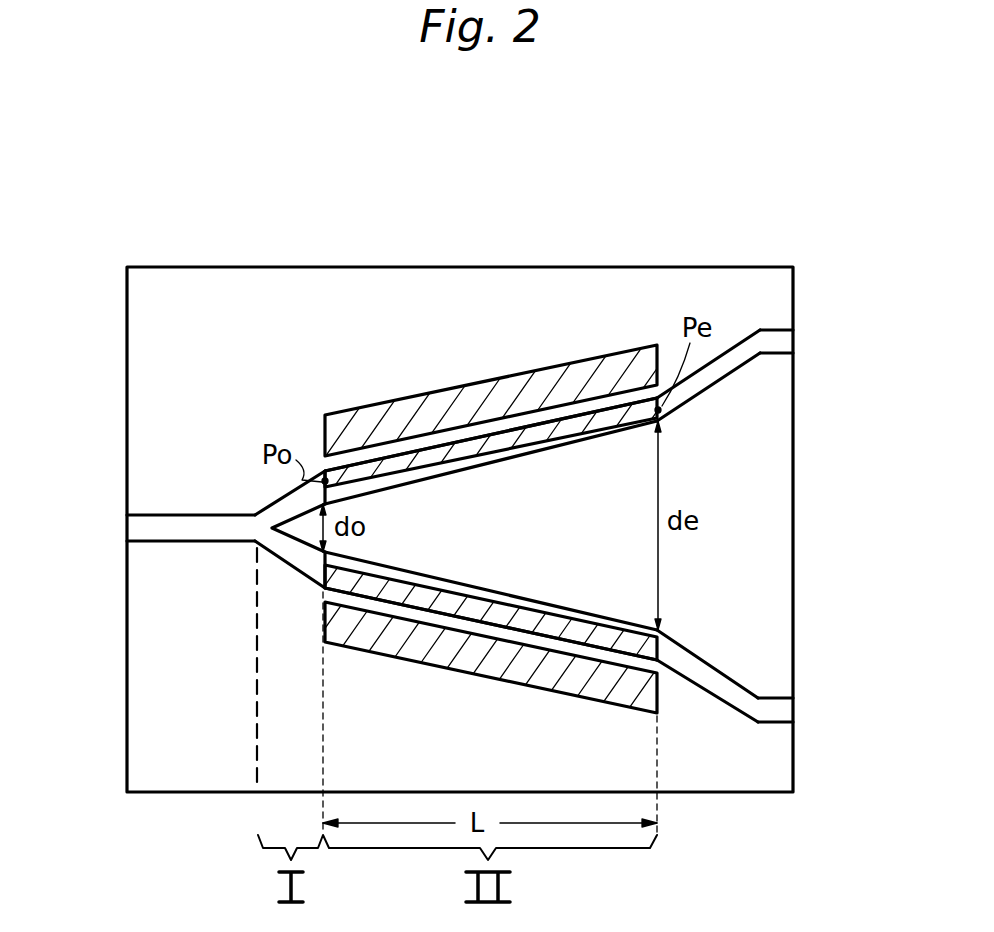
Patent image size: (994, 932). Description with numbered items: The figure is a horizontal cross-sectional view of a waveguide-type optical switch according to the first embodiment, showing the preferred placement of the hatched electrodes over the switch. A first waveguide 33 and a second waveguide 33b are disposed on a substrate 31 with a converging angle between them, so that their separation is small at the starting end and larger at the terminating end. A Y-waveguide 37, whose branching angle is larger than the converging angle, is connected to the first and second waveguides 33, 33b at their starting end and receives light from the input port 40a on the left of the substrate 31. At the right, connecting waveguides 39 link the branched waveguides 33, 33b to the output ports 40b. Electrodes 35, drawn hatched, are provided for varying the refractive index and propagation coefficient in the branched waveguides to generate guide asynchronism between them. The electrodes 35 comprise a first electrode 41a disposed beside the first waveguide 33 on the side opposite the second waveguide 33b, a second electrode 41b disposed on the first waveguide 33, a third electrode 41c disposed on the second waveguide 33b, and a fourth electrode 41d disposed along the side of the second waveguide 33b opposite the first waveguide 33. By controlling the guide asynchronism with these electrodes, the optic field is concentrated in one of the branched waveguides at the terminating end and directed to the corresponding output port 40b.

The substrate 31 is at (291, 267).
The first waveguide 33 is at (560, 490).
The second waveguide 33b is at (420, 571).
The electrodes 35 is at (557, 427).
The Y-waveguide 37 is at (320, 592).
The waveguides 39 is at (790, 362).
The input port 40a is at (127, 532).
The output ports 40b is at (796, 338).
The first electrode 41a is at (440, 402).
The second electrode 41b is at (535, 436).
The third electrode 41c is at (548, 627).
The fourth electrode 41d is at (597, 671).